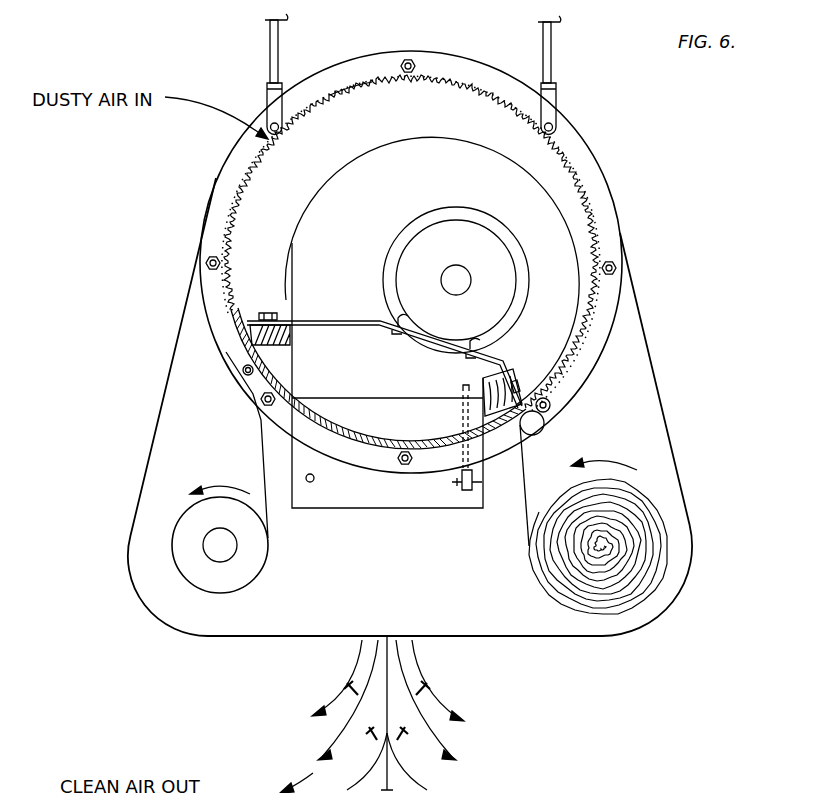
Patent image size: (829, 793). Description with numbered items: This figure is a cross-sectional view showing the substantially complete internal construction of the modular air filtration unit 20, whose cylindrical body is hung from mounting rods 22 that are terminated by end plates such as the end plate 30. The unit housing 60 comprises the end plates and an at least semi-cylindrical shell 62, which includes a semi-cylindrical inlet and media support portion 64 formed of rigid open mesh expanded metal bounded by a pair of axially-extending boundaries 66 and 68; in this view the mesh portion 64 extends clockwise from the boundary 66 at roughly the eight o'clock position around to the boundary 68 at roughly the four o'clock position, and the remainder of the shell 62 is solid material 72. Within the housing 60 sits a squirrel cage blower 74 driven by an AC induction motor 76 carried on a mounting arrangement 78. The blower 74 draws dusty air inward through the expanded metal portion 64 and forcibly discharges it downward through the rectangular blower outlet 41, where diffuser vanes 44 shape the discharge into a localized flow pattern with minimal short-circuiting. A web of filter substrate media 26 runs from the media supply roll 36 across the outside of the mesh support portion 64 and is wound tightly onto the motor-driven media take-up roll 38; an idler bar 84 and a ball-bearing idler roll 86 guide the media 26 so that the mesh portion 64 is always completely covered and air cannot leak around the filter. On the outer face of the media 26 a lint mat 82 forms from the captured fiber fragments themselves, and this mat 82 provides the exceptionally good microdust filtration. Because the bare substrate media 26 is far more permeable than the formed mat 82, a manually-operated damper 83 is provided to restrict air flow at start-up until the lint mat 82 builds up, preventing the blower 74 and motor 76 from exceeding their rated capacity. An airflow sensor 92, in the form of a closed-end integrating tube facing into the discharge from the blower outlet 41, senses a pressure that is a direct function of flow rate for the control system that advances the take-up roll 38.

The modular air filtration unit 20 is at (654, 176).
The mounting rods 22 is at (270, 47).
The filter media 26 is at (258, 432).
The end plate 30 is at (668, 402).
The media supply roll 36 is at (248, 577).
The media take-up roll 38 is at (628, 612).
The blower outlet 41 is at (425, 508).
The vanes 44 is at (366, 731).
The unit housing 60 is at (208, 332).
The semi-cylindrical shell 62 is at (475, 98).
The inlet and media support portion 64 is at (446, 76).
The axially-extending boundary 66 is at (240, 312).
The axially-extending boundary 68 is at (506, 394).
The solid material 72 is at (407, 438).
The squirrel cage blower 74 is at (366, 176).
The AC induction motor 76 is at (469, 238).
The mounting arrangement 78 is at (343, 320).
The lint mat 82 is at (352, 82).
The manually-operated damper 83 is at (462, 394).
The idler bar 84 is at (245, 376).
The ball-bearing idler roll 86 is at (546, 432).
The airflow sensor 92 is at (314, 480).